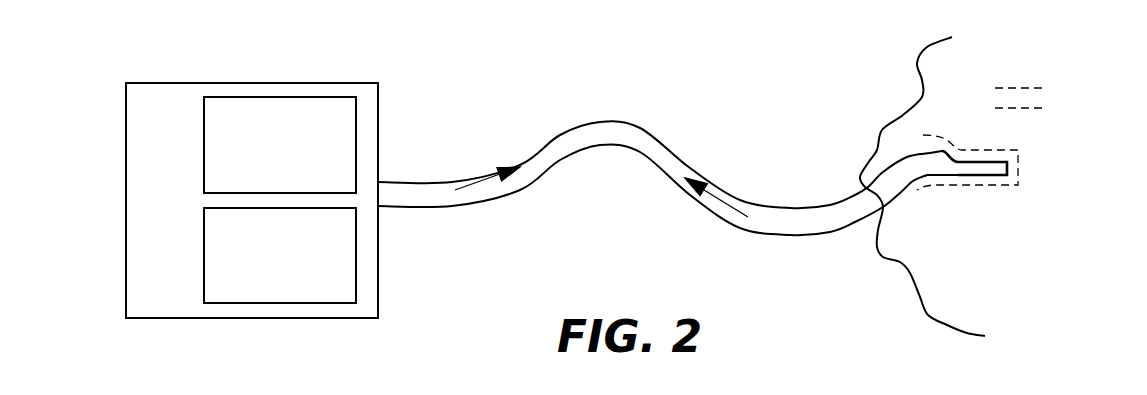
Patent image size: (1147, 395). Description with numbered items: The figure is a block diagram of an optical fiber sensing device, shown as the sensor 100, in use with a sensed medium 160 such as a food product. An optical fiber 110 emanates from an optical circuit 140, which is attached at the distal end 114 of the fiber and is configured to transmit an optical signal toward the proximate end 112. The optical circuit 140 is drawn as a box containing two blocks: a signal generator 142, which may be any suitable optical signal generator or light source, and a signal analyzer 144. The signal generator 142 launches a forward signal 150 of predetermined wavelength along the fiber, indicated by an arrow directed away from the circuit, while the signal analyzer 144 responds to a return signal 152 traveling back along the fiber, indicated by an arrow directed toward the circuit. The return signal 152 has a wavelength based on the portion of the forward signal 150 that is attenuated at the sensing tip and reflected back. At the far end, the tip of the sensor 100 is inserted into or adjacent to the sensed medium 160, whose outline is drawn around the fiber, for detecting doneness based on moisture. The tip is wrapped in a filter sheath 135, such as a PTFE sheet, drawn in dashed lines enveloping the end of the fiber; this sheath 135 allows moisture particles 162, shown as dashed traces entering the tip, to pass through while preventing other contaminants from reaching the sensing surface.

The sensor 100 is at (968, 213).
The optical fiber 110 is at (605, 147).
The proximate end 112 is at (970, 128).
The distal end 114 is at (393, 230).
The filter sheath 135 is at (1020, 168).
The optical circuit 140 is at (180, 209).
The signal generator 142 is at (260, 182).
The signal analyzer 144 is at (260, 294).
The forward signal 150 is at (484, 182).
The return signal 152 is at (718, 207).
The sensed medium 160 is at (1072, 294).
The moisture particles 162 is at (1054, 81).